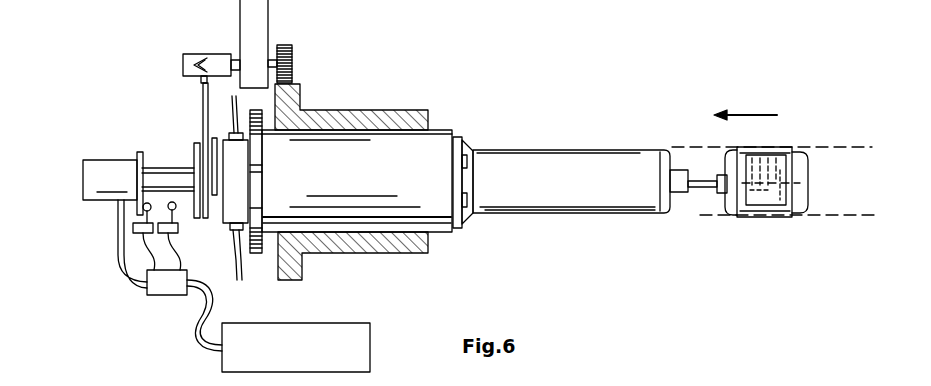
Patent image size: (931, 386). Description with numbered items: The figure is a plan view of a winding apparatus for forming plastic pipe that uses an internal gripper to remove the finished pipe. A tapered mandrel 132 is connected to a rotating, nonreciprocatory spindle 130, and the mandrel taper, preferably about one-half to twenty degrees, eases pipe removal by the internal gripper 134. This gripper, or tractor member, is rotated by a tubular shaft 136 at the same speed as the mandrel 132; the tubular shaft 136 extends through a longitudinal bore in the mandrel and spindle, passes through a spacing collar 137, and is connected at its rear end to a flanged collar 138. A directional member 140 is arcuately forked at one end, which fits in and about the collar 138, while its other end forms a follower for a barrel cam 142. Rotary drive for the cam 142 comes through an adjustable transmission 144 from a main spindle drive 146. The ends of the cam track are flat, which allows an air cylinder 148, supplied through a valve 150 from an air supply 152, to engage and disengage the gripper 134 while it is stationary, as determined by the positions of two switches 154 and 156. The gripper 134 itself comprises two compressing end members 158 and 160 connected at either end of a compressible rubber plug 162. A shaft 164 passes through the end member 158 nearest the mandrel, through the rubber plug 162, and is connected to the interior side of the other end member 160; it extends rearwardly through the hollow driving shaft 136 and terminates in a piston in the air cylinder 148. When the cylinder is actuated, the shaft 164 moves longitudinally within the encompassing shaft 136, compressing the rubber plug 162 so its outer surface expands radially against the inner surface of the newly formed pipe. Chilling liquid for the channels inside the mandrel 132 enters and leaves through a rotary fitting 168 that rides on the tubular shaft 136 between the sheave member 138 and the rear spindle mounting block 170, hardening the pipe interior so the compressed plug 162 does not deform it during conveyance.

The spindle 130 is at (398, 187).
The tapered mandrel 132 is at (641, 158).
The internal gripper 134 is at (766, 213).
The tubular shaft 136 is at (136, 155).
The spacing collar 137 is at (215, 175).
The flanged collar 138 is at (193, 156).
The directional member 140 is at (198, 103).
The barrel cam 142 is at (213, 62).
The adjustable transmission 144 is at (268, 18).
The main spindle drive 146 is at (370, 110).
The air cylinder 148 is at (98, 166).
The valve 150 is at (160, 288).
The air supply 152 is at (352, 324).
The switch 154 is at (137, 229).
The switch 156 is at (180, 232).
The compressing end member 158 is at (729, 206).
The compressing end member 160 is at (805, 170).
The compressible rubber plug 162 is at (753, 152).
The shaft 164 is at (701, 178).
The rotary fitting 168 is at (237, 165).
The rear spindle mounting block 170 is at (258, 195).